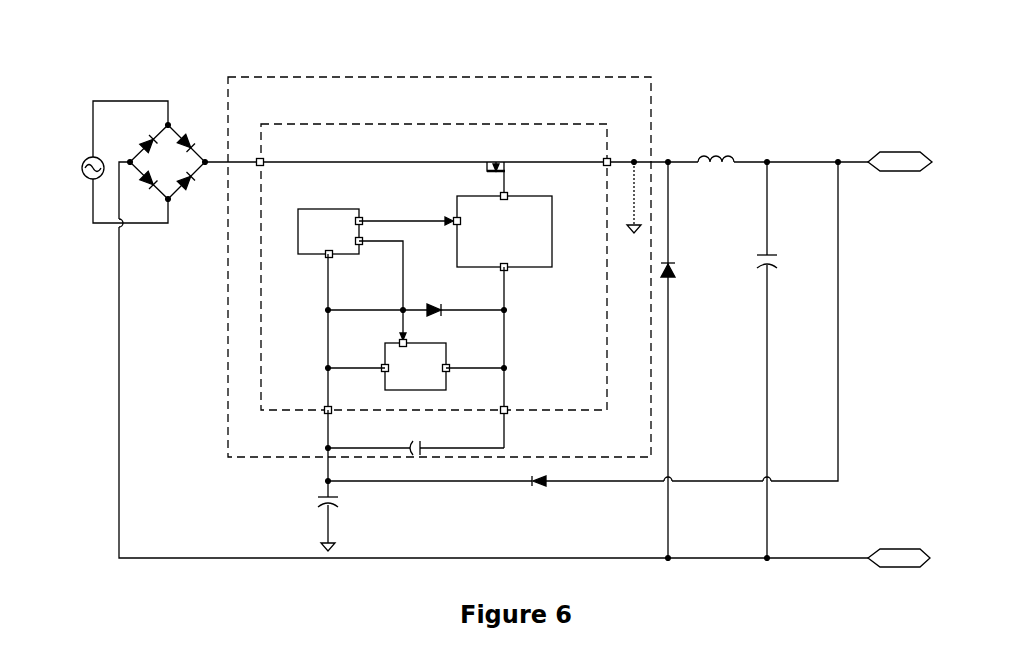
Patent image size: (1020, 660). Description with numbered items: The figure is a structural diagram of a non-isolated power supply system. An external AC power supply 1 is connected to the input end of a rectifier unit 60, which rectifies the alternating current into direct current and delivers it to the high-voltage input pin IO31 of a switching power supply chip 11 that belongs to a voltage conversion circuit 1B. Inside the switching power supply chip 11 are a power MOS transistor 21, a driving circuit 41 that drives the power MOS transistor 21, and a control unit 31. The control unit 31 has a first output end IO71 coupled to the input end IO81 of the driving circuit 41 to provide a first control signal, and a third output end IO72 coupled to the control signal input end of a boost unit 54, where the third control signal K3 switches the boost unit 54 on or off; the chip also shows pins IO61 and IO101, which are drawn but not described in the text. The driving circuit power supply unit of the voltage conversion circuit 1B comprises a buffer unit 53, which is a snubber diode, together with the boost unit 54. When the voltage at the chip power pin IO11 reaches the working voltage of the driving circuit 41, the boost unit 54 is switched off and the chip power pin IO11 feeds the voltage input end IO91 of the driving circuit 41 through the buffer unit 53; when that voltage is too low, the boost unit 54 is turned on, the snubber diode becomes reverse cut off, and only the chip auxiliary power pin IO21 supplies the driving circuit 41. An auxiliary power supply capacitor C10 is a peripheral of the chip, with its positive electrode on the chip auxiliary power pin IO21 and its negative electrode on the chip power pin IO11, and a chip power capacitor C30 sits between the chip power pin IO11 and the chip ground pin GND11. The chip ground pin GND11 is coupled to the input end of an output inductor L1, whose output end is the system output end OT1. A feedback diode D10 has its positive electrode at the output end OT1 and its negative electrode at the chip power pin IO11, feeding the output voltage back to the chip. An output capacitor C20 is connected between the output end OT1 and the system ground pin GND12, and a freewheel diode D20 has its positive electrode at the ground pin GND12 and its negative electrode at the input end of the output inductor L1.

The external AC power supply 1 is at (112, 162).
The rectifier unit 60 is at (169, 146).
The voltage conversion circuit 1B is at (439, 252).
The switching power supply chip 11 is at (435, 253).
The high-voltage input pin IO31 is at (247, 168).
The chip ground pin GND11 is at (623, 188).
The power MOS transistor 21 is at (512, 166).
The control unit 31 is at (321, 209).
The first output end IO71 is at (362, 218).
The third output end IO72 is at (362, 246).
The control unit pin IO61 is at (325, 258).
The driving circuit 41 is at (526, 231).
The input end of the driving circuit IO81 is at (453, 216).
The driving circuit output pin IO101 is at (508, 192).
The voltage input end of the driving circuit IO91 is at (507, 272).
The buffer unit 53 is at (445, 297).
The boost unit 54 is at (423, 358).
The third control signal K3 is at (394, 339).
The chip power pin IO11 is at (312, 419).
The chip auxiliary power pin IO21 is at (518, 419).
The auxiliary power supply capacitor C10 is at (416, 436).
The chip power capacitor C30 is at (318, 489).
The feedback diode D10 is at (583, 338).
The freewheel diode D20 is at (690, 360).
The output capacitor C20 is at (790, 360).
The output inductor L1 is at (725, 139).
The output end of the non-isolated power supply system OT1 is at (900, 174).
The ground pin of the non-isolated power supply system GND12 is at (902, 566).